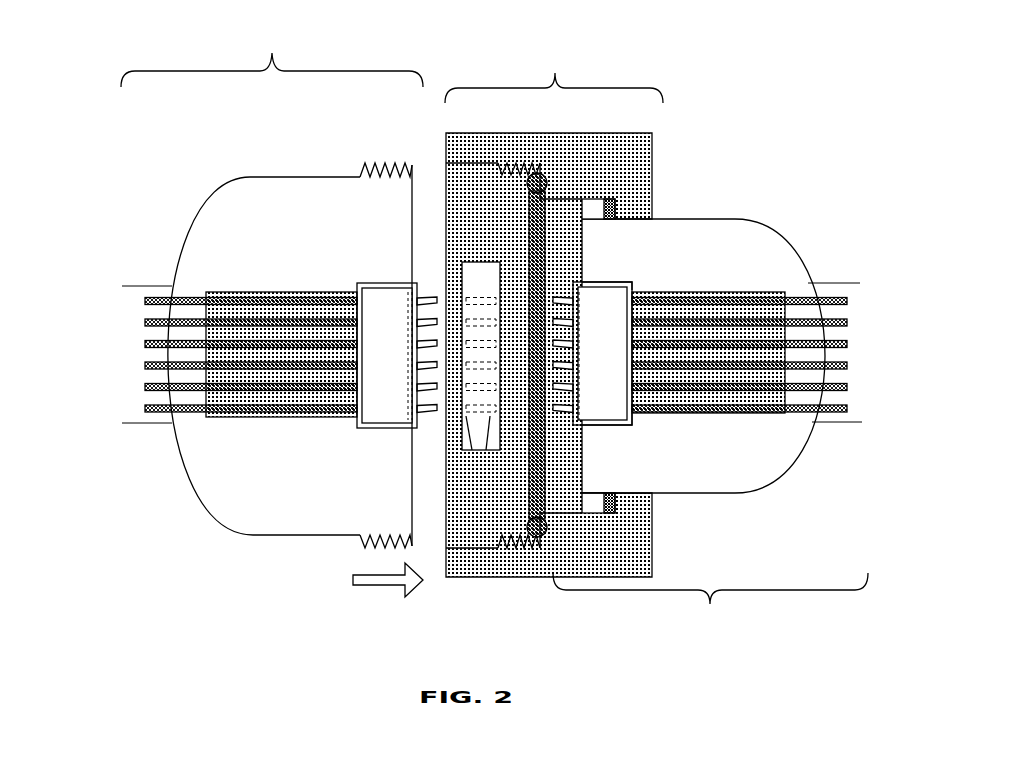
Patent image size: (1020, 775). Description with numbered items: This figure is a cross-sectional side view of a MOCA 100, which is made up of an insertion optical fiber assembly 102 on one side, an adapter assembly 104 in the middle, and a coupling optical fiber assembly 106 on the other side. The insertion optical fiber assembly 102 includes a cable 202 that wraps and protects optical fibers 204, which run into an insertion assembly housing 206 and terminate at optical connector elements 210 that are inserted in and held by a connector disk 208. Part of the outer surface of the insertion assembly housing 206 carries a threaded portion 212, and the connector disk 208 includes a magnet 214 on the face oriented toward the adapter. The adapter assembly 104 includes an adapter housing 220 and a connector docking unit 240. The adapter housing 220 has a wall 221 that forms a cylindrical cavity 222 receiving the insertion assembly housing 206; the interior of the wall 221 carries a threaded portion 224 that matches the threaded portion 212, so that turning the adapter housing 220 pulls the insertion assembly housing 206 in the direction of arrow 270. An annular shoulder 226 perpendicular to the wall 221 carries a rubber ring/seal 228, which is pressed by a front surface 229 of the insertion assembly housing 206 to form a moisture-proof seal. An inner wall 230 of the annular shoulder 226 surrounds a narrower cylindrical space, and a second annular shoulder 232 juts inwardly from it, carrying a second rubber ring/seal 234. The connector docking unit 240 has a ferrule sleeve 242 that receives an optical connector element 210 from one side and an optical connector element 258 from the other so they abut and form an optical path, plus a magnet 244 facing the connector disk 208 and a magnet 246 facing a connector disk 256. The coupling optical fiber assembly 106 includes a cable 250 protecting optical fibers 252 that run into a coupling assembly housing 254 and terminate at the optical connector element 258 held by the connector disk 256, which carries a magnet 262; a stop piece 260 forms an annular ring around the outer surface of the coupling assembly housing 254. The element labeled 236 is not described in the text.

The MOCA 100 is at (803, 102).
The insertion optical fiber assembly 102 is at (272, 59).
The adapter assembly 104 is at (554, 77).
The coupling optical fiber assembly 106 is at (710, 601).
The cable 202 is at (130, 285).
The optical fibers 204 is at (168, 296).
The insertion assembly housing 206 is at (232, 197).
The connector disk 208 is at (373, 283).
The optical connector elements 210 is at (436, 292).
The threaded portion 212 is at (376, 168).
The magnet 214 is at (410, 293).
The adapter housing 220 is at (500, 133).
The wall 221 is at (480, 147).
The cylindrical cavity 222 is at (473, 180).
The threaded portion 224 is at (512, 163).
The annular shoulder 226 is at (558, 185).
The rubber ring/seal 228 is at (546, 177).
The front surface 229 is at (413, 540).
The inner wall 230 is at (615, 198).
The second annular shoulder 232 is at (630, 205).
The rubber ring/seal 234 is at (615, 202).
The second shell 236 is at (637, 219).
The connector docking unit 240 is at (480, 450).
The ferrule sleeve 242 is at (488, 450).
The magnet 244 is at (472, 450).
The magnet 246 is at (488, 450).
The cable 250 is at (830, 424).
The optical fibers 252 is at (706, 414).
The coupling assembly housing 254 is at (670, 494).
The connector disk 256 is at (633, 425).
The optical connector element 258 is at (564, 412).
The stop piece 260 is at (597, 512).
The magnet 262 is at (600, 429).
The arrow 270 is at (378, 587).